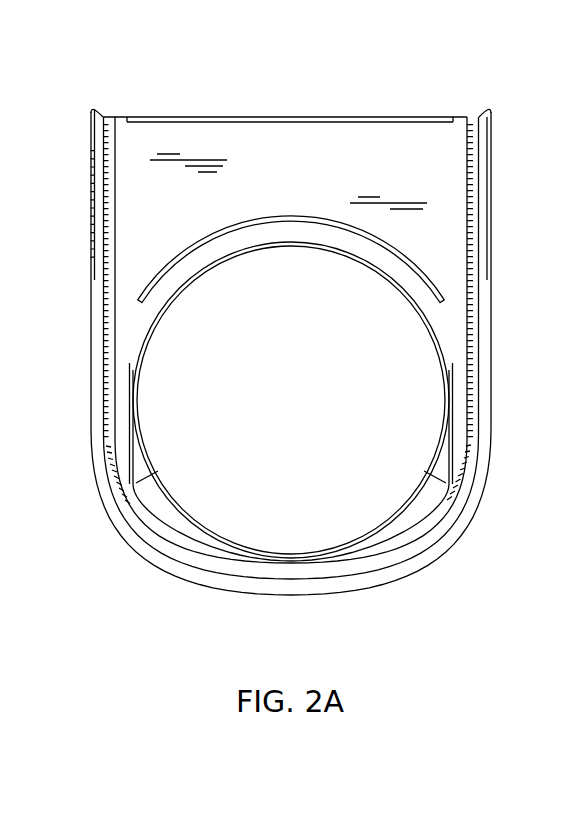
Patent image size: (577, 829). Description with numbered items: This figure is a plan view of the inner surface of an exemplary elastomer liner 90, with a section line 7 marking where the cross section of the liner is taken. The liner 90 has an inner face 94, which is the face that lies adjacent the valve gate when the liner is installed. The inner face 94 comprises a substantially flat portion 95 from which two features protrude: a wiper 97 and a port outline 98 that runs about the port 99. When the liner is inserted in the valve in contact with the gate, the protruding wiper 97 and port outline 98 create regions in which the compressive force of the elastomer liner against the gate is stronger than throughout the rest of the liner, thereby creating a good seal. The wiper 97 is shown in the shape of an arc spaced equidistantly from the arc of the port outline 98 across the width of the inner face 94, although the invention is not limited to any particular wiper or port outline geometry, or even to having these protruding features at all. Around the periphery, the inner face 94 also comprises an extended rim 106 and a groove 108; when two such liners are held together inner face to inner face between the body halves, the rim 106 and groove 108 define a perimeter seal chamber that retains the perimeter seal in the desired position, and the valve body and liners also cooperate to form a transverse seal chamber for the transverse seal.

The section line 7 is at (297, 63).
The elastomer liner 90 is at (346, 103).
The inner face 94 is at (407, 145).
The substantially flat portion 95 is at (140, 191).
The wiper 97 is at (278, 214).
The port outline 98 is at (152, 334).
The port 99 is at (210, 497).
The extended rim 106 is at (487, 112).
The groove 108 is at (473, 118).